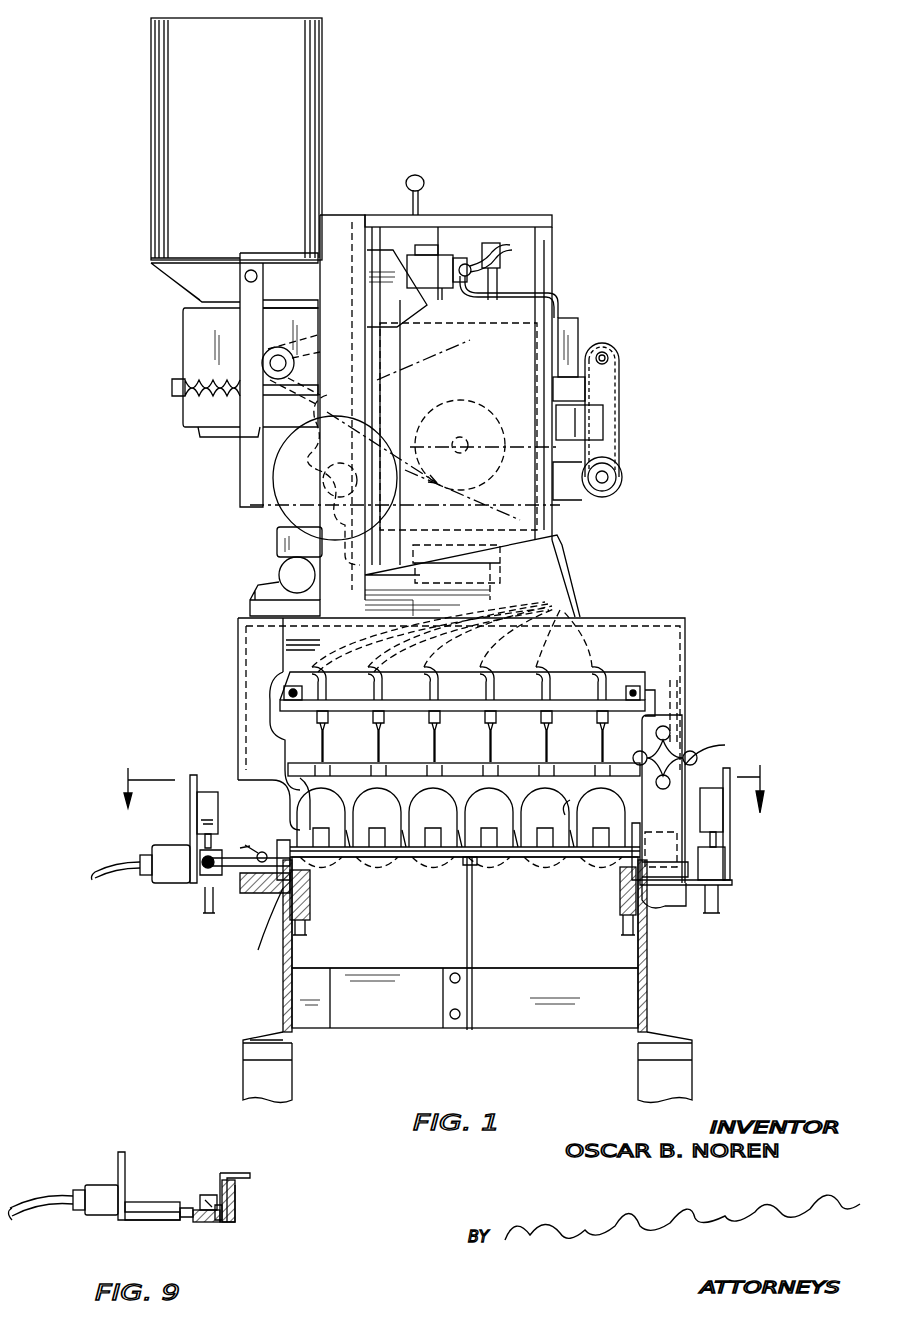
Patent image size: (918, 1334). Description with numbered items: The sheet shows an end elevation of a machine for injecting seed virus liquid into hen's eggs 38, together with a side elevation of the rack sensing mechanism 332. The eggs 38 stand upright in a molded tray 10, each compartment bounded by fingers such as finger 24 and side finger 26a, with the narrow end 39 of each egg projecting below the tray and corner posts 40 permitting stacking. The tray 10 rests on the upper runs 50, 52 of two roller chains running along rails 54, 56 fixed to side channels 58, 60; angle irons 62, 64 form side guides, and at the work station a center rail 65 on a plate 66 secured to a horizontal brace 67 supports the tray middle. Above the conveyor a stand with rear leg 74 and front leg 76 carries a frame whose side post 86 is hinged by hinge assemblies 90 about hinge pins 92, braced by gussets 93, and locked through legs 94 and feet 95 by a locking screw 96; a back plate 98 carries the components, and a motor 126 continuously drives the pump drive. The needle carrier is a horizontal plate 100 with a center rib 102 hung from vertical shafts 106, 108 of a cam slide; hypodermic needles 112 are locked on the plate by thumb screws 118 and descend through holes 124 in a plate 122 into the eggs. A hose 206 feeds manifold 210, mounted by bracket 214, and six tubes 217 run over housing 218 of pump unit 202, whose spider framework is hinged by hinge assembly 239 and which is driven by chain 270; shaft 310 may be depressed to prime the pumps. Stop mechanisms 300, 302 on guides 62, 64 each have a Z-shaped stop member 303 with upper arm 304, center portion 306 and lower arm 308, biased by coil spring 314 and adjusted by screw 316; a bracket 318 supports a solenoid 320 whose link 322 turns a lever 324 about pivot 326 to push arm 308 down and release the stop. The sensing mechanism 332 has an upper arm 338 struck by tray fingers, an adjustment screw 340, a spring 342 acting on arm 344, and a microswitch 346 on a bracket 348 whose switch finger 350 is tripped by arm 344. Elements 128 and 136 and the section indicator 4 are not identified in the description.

In FIG. 1, the motor 126 is at (151, 177).
In FIG. 1, the drive housing 128 is at (185, 352).
In FIG. 1, the upright side post 86 is at (320, 226).
In FIG. 1, the priming control shaft 310 is at (428, 185).
In FIG. 1, the bracket 214 is at (440, 262).
In FIG. 1, the vertical shaft 108 is at (428, 246).
In FIG. 1, the vertical shaft 106 is at (493, 245).
In FIG. 1, the manifold 210 is at (473, 272).
In FIG. 1, the hose 206 is at (512, 247).
In FIG. 1, the flexible tubes 217 is at (565, 300).
In FIG. 1, the pump unit housing 218 is at (580, 340).
In FIG. 1, the hinge assembly 239 is at (603, 422).
In FIG. 1, the pump unit 202 is at (645, 392).
In FIG. 1, the driving chain 270 is at (622, 484).
In FIG. 1, the back plate 98 is at (360, 392).
In FIG. 1, the cam 136 is at (466, 394).
In FIG. 1, the hinge assemblies 90 is at (277, 538).
In FIG. 1, the hinge pins 92 is at (290, 571).
In FIG. 1, the gussets 93 is at (572, 590).
In FIG. 1, the legs 94 is at (668, 616).
In FIG. 1, the horizontal plate 100 is at (650, 700).
In FIG. 1, the thumb screws 118 is at (284, 690).
In FIG. 1, the hypodermic needles 112 is at (378, 740).
In FIG. 1, the holes 124 is at (434, 762).
In FIG. 1, the upright center rib 102 is at (572, 695).
In FIG. 1, the vertical feet 95 is at (680, 705).
In FIG. 1, the locking screw 96 is at (672, 748).
In FIG. 1, the front leg 76 is at (728, 746).
In FIG. 1, the rear leg 74 is at (268, 724).
In FIG. 1, the plate 122 is at (262, 758).
In FIG. 1, the side finger 26a is at (298, 782).
In FIG. 1, the hen's eggs 38 is at (380, 800).
In FIG. 1, the finger 24 is at (549, 812).
In FIG. 1, the egg tray 10 is at (516, 868).
In FIG. 1, the upper chain run 50 is at (315, 870).
In FIG. 1, the narrow end of egg 39 is at (438, 860).
In FIG. 1, the center rail 65 is at (465, 866).
In FIG. 1, the vertical posts 40 is at (565, 862).
In FIG. 1, the upper chain run 52 is at (610, 858).
In FIG. 1, the plate 66 is at (474, 942).
In FIG. 1, the horizontal brace 67 is at (528, 1020).
In FIG. 1, the side channel 58 is at (283, 1010).
In FIG. 1, the side channel 60 is at (647, 1008).
In FIG. 1, the rail 54 is at (312, 910).
In FIG. 1, the rail 56 is at (620, 915).
In FIG. 1, the angle iron guide 64 is at (670, 905).
In FIG. 1, the stop mechanism 300 is at (146, 892).
In FIG. 1, the bracket 318 is at (190, 805).
In FIG. 1, the solenoid 320 is at (212, 792).
In FIG. 1, the link 322 is at (200, 860).
In FIG. 1, the Z-shaped stop member 303 is at (250, 842).
In FIG. 1, the upper arm 304 is at (278, 840).
In FIG. 1, the adjustment screw 316 is at (258, 850).
In FIG. 1, the lever pivot 326 is at (217, 877).
In FIG. 1, the lever 324 is at (262, 885).
In FIG. 1, the coil spring 314 is at (268, 885).
In FIG. 1, the lower arm 308 is at (275, 885).
In FIG. 1, the center portion 306 is at (285, 885).
In FIG. 1, the angle iron guide 62 is at (268, 928).
In FIG. 9, the angle iron guide 62 is at (226, 1218).
In FIG. 1, the section line 4 is at (441, 806).
In FIG. 1, the stop mechanism 302 is at (746, 884).
In FIG. 9, the microswitch 346 is at (125, 1220).
In FIG. 9, the bracket 348 is at (118, 1162).
In FIG. 9, the switch finger 350 is at (185, 1220).
In FIG. 9, the sensor arm 344 is at (208, 1195).
In FIG. 9, the compression coil spring 342 is at (210, 1222).
In FIG. 9, the sensing mechanism 332 is at (249, 1228).
In FIG. 9, the upper horizontal arm 338 is at (250, 1178).
In FIG. 9, the adjustment screw 340 is at (228, 1158).